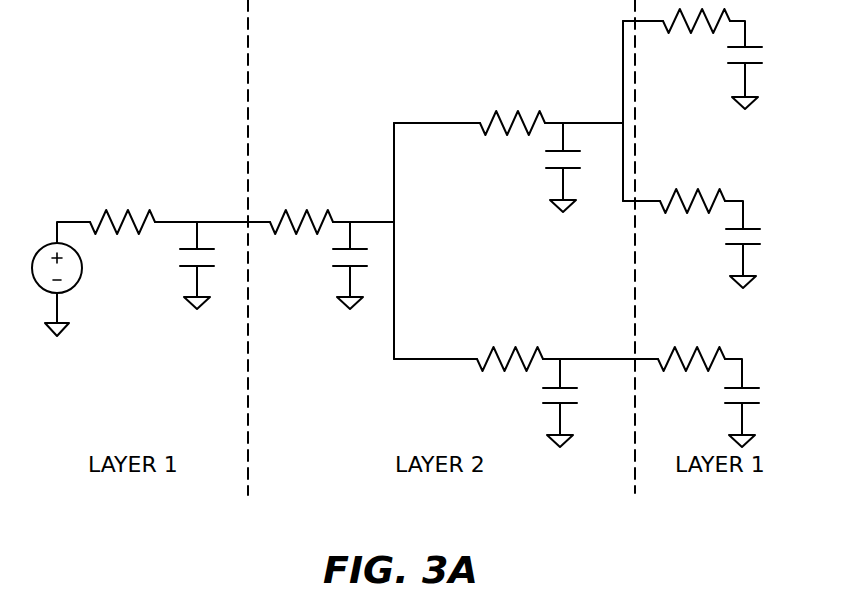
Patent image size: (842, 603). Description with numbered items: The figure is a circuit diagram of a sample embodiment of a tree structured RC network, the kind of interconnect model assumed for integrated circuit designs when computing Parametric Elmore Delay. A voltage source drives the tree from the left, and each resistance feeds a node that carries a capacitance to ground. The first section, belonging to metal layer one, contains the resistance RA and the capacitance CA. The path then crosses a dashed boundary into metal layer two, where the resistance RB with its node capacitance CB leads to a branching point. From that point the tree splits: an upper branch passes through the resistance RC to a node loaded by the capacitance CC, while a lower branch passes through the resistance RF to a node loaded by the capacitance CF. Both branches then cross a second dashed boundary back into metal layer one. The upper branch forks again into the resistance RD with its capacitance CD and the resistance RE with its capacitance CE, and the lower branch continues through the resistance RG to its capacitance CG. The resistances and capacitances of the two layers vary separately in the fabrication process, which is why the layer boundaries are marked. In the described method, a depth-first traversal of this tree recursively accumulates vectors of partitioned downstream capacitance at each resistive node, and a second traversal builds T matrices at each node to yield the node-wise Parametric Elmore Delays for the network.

The resistance RA is at (122, 240).
The resistance RB is at (301, 240).
The resistance RC is at (512, 144).
The resistance RD is at (696, 38).
The resistance RE is at (692, 219).
The resistance RF is at (510, 381).
The resistance RG is at (691, 378).
The capacitance CA is at (209, 265).
The capacitance CB is at (359, 265).
The capacitance CC is at (571, 167).
The capacitance CD is at (755, 78).
The capacitance CE is at (752, 258).
The capacitance CF is at (568, 403).
The capacitance CG is at (753, 417).